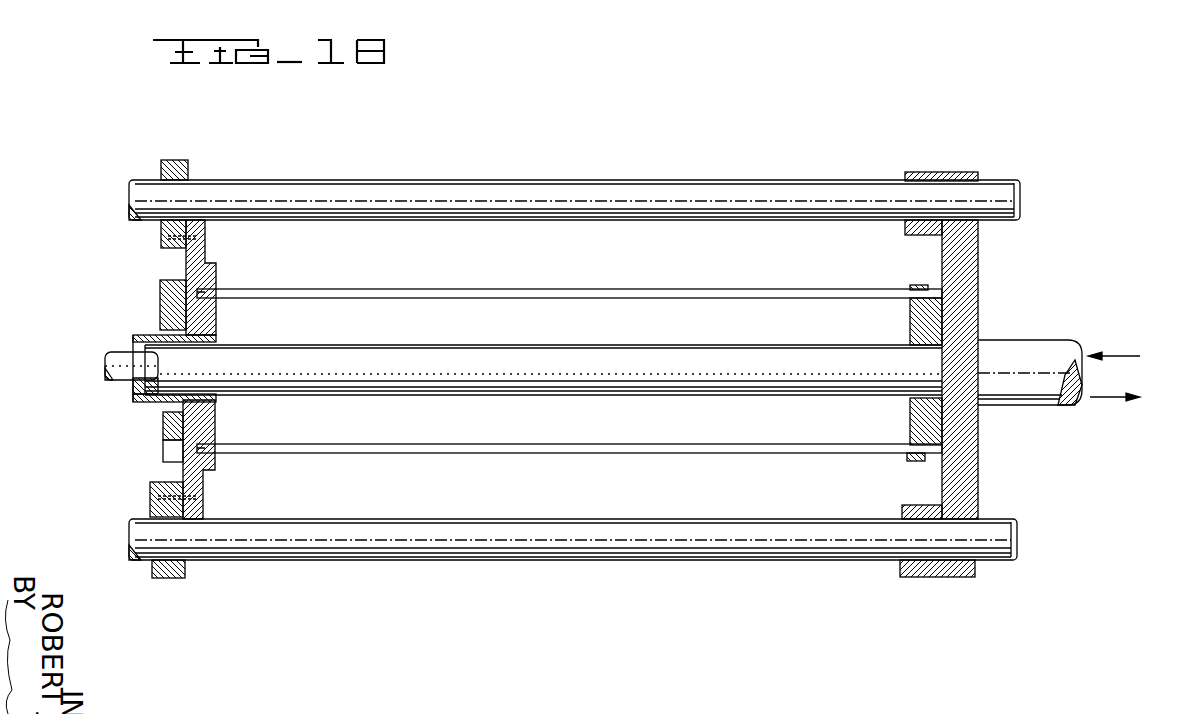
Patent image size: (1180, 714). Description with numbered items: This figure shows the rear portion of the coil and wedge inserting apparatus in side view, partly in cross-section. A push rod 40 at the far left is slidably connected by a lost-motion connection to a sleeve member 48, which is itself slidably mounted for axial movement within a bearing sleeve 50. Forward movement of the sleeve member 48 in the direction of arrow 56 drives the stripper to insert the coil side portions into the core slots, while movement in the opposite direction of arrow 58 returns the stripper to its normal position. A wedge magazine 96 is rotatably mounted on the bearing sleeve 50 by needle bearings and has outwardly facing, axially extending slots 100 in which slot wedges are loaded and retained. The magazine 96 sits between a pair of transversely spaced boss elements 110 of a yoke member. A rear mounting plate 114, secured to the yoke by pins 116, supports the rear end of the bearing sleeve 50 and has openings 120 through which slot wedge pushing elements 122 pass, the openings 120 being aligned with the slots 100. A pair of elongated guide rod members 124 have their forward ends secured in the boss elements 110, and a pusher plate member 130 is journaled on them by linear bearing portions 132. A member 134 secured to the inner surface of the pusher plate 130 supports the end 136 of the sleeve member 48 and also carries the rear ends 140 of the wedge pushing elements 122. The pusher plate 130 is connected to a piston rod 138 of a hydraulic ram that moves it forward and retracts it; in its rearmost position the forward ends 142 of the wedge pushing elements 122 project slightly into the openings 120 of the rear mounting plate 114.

The push rod 40 is at (115, 353).
The sleeve member 48 is at (592, 375).
The bearing sleeve 50 is at (134, 397).
The arrow 56 is at (1130, 352).
The arrow 58 is at (1130, 398).
The wedge magazine 96 is at (160, 300).
The slots 100 is at (166, 455).
The boss elements 110 is at (176, 160).
The rear mounting plate 114 is at (216, 410).
The pins 116 is at (198, 238).
The openings 120 is at (206, 266).
The slot wedge pushing elements 122 is at (415, 288).
The guide rod members 124 is at (487, 186).
The pusher plate member 130 is at (975, 249).
The linear bearing portions 132 is at (935, 170).
The member 134 is at (910, 425).
The end of sleeve member 136 is at (897, 360).
The piston rod 138 is at (1027, 345).
The rear ends of slot wedge pushing elements 140 is at (866, 292).
The forward ends of wedge pushing elements 142 is at (198, 292).